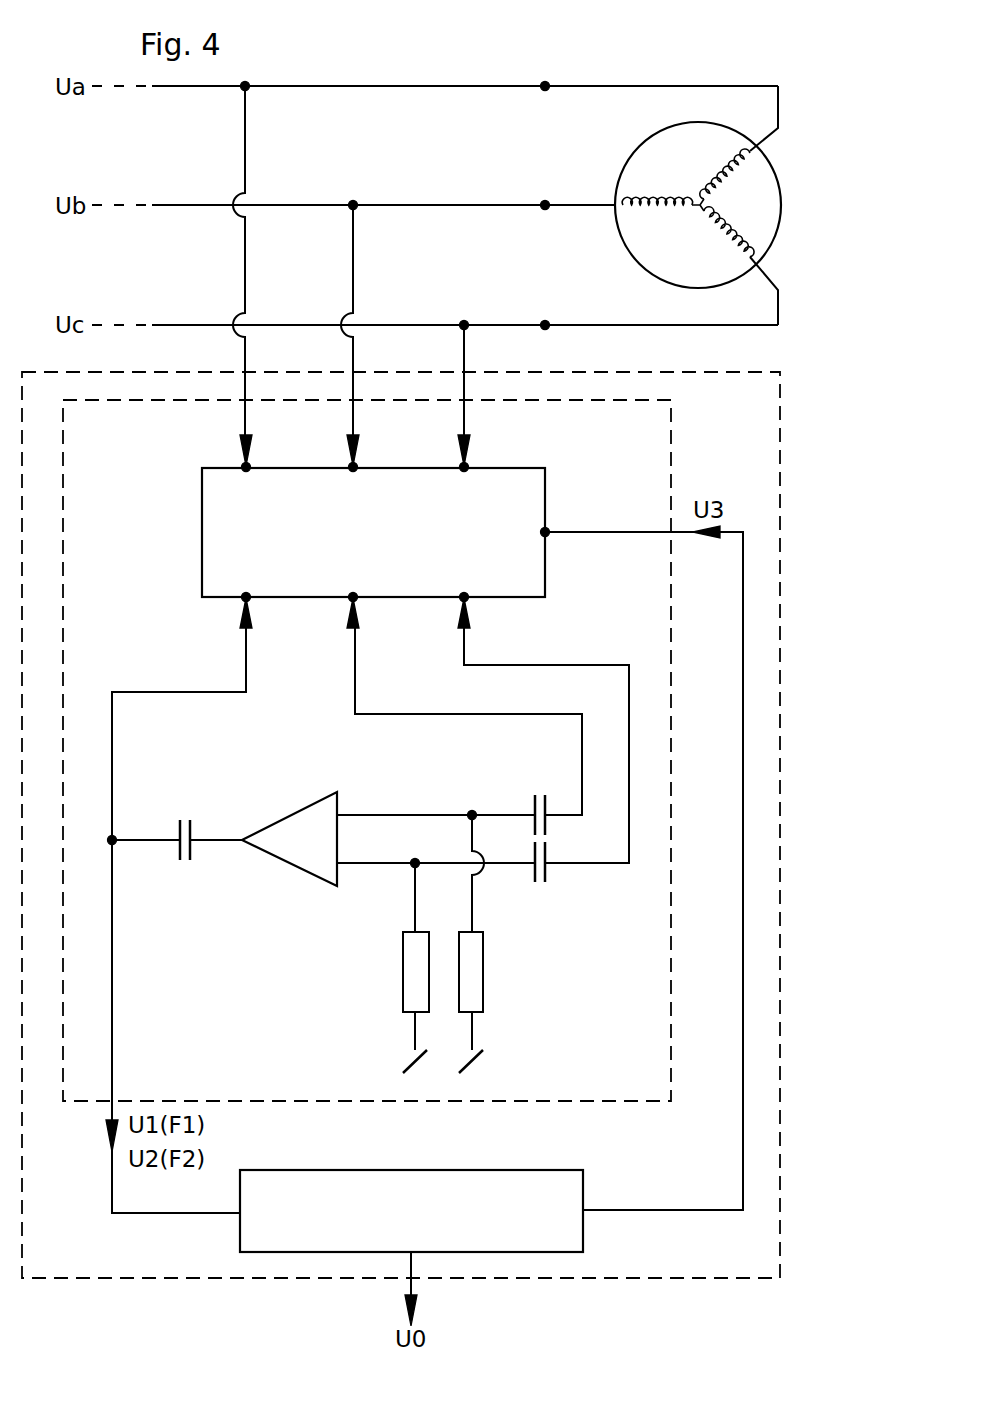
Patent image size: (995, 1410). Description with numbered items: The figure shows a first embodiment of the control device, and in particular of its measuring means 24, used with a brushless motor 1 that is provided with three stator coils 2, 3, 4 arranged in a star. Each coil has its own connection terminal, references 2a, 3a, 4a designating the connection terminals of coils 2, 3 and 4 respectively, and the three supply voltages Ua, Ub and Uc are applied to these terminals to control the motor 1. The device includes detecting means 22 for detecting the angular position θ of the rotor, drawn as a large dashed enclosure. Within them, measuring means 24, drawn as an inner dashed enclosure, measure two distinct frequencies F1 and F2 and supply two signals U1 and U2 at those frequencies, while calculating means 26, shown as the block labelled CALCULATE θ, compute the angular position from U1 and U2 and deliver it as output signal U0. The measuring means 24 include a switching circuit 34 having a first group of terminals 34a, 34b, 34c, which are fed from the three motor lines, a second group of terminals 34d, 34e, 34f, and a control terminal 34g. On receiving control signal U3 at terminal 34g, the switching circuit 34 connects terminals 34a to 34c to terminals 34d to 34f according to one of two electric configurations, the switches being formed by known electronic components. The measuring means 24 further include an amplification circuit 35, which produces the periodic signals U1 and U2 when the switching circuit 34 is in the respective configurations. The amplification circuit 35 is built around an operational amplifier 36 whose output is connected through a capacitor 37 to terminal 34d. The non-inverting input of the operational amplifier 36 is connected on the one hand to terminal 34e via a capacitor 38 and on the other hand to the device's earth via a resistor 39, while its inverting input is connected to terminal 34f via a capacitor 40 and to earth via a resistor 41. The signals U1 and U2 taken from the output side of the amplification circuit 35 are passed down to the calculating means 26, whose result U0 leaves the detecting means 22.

The brushless motor 1 is at (728, 198).
The stator coil 2 is at (734, 172).
The stator coil 3 is at (651, 200).
The stator coil 4 is at (728, 240).
The connection terminal 2a is at (546, 84).
The connection terminal 3a is at (546, 203).
The connection terminal 4a is at (546, 322).
The detecting means 22 is at (800, 413).
The measuring means 24 is at (692, 485).
The calculating means 26 is at (550, 1146).
The switching circuit 34 is at (180, 532).
The terminal 34a is at (243, 465).
The terminal 34b is at (351, 465).
The terminal 34c is at (462, 465).
The terminal 34d is at (243, 600).
The terminal 34e is at (351, 600).
The terminal 34f is at (462, 600).
The control terminal 34g is at (548, 528).
The amplification circuit 35 is at (369, 886).
The operational amplifier 36 is at (270, 796).
The capacitor 37 is at (167, 806).
The capacitor 38 is at (512, 794).
The resistor 39 is at (504, 972).
The capacitor 40 is at (572, 896).
The resistor 41 is at (382, 972).